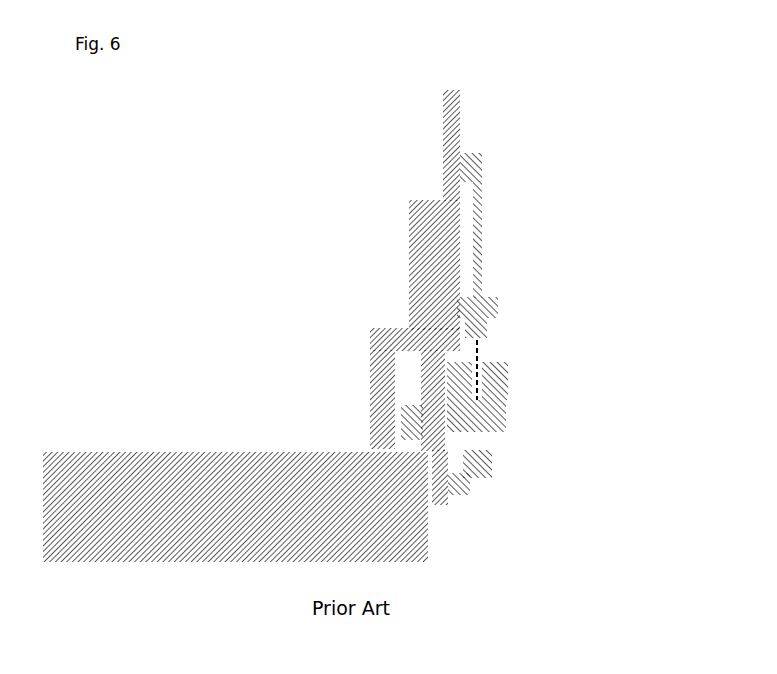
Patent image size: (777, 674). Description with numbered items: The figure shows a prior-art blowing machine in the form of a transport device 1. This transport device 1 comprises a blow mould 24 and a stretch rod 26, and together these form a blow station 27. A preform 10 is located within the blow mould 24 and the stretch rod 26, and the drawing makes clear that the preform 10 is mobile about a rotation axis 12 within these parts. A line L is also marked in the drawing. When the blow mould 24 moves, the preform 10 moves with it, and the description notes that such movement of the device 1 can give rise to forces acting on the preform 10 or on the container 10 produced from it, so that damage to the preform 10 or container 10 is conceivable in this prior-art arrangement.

The transport device 1 is at (290, 252).
The rotation axis 12 is at (235, 442).
The stretch rod 26 is at (474, 207).
The blow station 27 is at (625, 300).
The parting line L is at (477, 355).
The preform 10 is at (485, 385).
The blow mould 24 is at (497, 423).